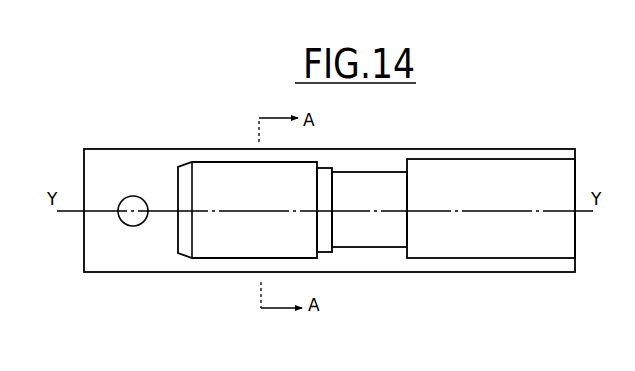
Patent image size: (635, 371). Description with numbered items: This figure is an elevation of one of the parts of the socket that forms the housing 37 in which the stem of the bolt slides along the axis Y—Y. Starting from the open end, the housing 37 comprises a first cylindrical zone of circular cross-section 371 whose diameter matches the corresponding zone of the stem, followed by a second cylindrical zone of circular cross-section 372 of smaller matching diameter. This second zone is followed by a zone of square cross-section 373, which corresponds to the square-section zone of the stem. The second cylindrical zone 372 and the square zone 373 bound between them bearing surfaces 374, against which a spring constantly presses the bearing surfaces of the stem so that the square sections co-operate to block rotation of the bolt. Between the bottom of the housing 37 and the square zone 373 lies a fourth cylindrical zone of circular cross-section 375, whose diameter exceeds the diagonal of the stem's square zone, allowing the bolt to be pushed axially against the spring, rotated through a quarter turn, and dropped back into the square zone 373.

The housing 37 is at (376, 211).
The first cylindrical zone of circular cross-section 371 is at (480, 178).
The second cylindrical zone of circular cross-section 372 is at (377, 183).
The zone of square cross-section 373 is at (328, 170).
The bearing surfaces 374 is at (333, 227).
The fourth cylindrical zone of circular cross-section 375 is at (239, 192).